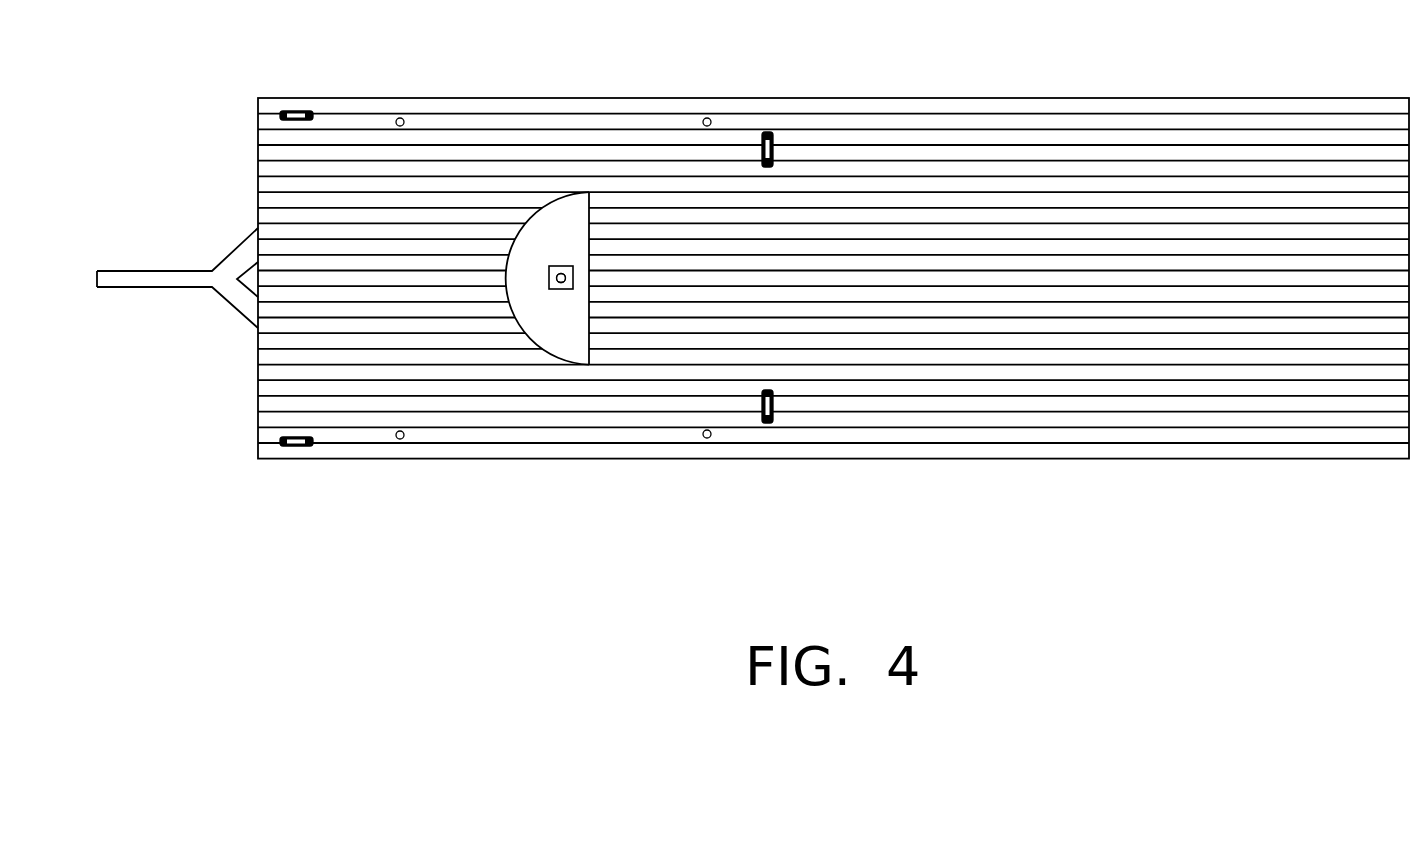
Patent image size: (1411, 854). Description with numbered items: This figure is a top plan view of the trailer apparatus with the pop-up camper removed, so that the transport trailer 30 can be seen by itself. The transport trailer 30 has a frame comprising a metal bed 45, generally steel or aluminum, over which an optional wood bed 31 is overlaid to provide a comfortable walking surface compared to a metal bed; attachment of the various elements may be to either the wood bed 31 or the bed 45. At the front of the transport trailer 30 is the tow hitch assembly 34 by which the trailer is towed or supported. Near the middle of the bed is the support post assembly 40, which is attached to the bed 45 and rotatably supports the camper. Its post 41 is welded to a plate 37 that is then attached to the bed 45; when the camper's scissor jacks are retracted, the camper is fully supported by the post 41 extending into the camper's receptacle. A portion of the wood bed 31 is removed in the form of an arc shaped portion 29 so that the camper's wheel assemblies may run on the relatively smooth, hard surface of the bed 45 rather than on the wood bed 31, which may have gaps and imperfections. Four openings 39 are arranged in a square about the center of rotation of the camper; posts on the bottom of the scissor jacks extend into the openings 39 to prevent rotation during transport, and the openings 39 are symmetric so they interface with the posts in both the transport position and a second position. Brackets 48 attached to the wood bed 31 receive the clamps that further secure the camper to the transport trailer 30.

The arc shaped portion 29 is at (542, 348).
The transport trailer 30 is at (1325, 459).
The wood bed 31 is at (1237, 103).
The tow hitch assembly 34 is at (110, 287).
The plate 37 is at (549, 279).
The openings 39 is at (400, 118).
The support post assembly 40 is at (572, 344).
The post 41 is at (561, 273).
The bed 45 is at (532, 258).
The brackets 48 is at (296, 111).